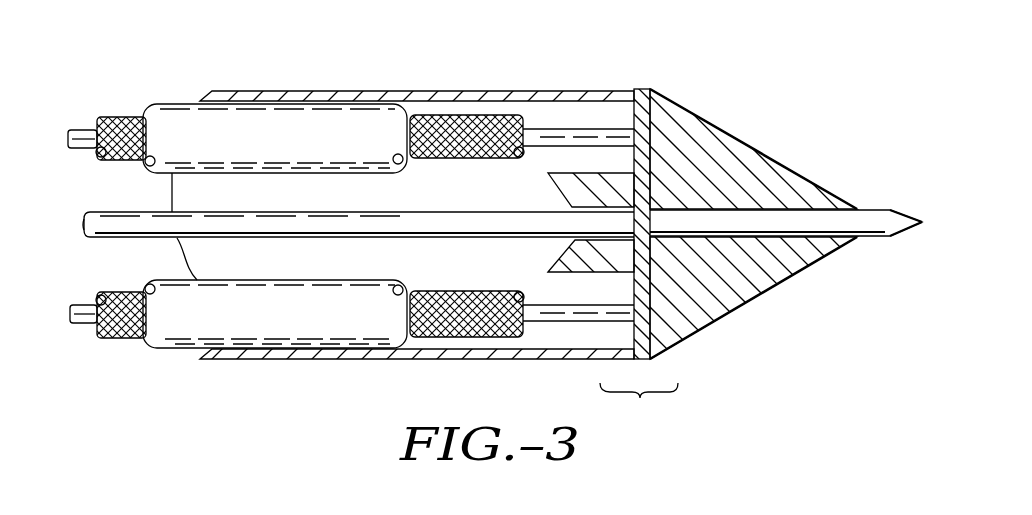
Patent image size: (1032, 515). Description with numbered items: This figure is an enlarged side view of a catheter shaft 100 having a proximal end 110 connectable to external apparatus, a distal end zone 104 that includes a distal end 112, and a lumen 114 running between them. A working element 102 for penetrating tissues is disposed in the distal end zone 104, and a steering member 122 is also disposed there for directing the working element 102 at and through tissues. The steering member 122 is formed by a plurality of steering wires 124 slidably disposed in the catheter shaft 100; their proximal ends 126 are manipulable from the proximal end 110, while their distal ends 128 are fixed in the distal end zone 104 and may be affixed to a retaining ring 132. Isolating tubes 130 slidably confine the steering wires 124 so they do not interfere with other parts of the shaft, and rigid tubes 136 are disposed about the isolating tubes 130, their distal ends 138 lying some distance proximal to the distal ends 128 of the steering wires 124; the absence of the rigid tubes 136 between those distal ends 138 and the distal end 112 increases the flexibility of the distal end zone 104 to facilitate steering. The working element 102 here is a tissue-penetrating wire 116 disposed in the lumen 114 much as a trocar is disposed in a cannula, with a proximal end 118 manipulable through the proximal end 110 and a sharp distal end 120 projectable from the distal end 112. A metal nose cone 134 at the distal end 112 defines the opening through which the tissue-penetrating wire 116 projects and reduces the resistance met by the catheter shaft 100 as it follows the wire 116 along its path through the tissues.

The catheter shaft 100 is at (552, 91).
The working element 102 is at (772, 190).
The distal end zone 104 is at (639, 407).
The proximal end 110 is at (206, 91).
The distal end 112 is at (648, 89).
The lumen 114 is at (172, 197).
The tissue-penetrating wire 116 is at (163, 243).
The proximal end of tissue-penetrating wire 118 is at (88, 238).
The sharp distal end 120 is at (922, 224).
The steering member 122 is at (420, 113).
The steering wires 124 is at (545, 333).
The proximal ends of steering wires 126 is at (86, 324).
The distal ends of steering wires 128 is at (632, 125).
The isolating tubes 130 is at (470, 113).
The retaining ring 132 is at (650, 115).
The metal nose cone 134 is at (758, 292).
The rigid tubes 136 is at (298, 104).
The distal ends of rigid tubes 138 is at (409, 345).